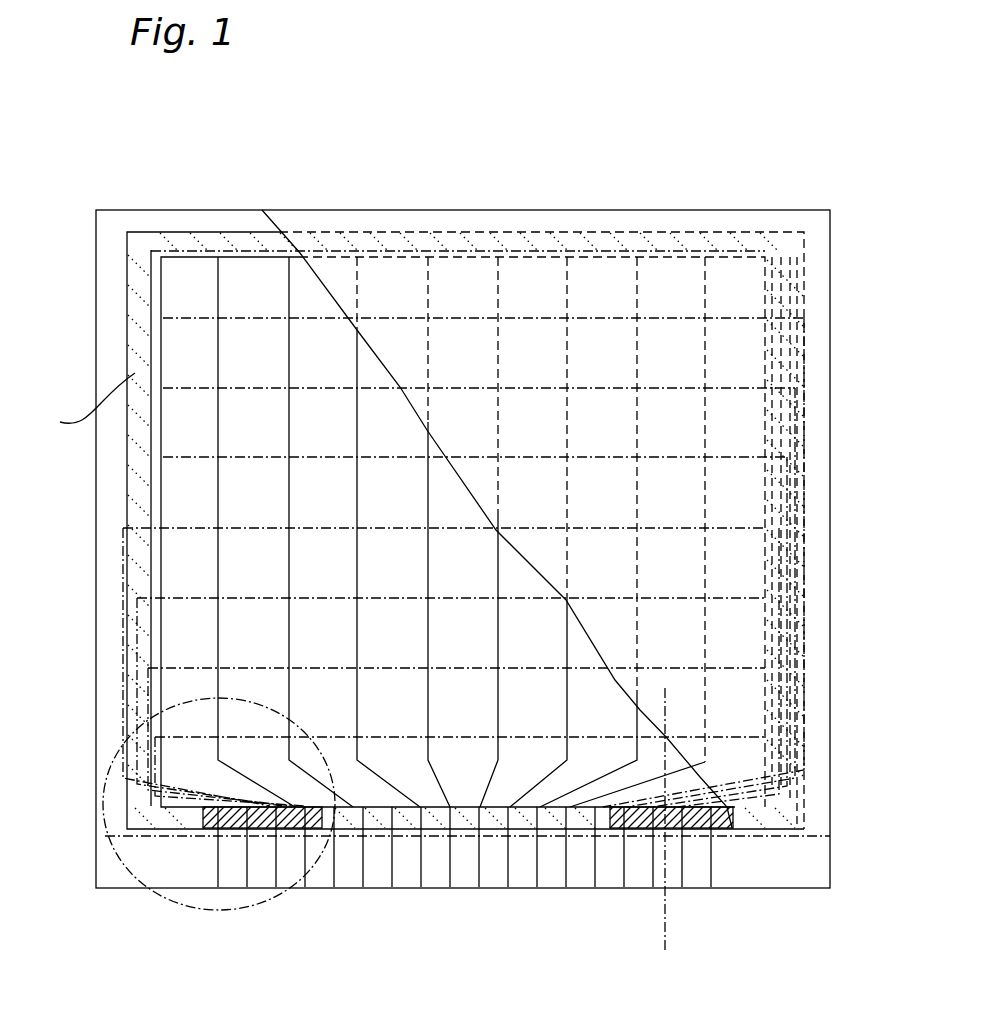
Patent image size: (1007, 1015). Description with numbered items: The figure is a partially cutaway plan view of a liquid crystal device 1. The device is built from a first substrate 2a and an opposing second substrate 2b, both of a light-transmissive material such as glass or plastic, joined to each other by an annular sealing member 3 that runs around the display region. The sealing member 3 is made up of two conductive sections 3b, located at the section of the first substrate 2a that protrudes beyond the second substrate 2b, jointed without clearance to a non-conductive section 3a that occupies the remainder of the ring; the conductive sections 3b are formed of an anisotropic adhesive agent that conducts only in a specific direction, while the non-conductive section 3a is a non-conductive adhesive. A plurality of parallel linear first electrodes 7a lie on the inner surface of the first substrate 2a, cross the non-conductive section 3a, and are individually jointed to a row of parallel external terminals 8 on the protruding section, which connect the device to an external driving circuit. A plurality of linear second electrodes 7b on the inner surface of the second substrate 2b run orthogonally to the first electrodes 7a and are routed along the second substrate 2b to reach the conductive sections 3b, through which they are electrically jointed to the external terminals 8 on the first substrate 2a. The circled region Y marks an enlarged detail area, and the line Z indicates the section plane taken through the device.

The liquid crystal device 1 is at (92, 192).
The first substrate 2a is at (108, 264).
The second substrate 2b is at (808, 227).
The sealing member 3 is at (124, 330).
The non-conductive section 3a is at (890, 812).
The conductive section 3b is at (297, 803).
The first electrodes 7a is at (287, 352).
The second electrodes 7b is at (253, 598).
The external terminals 8 is at (725, 895).
The enlarged region Y is at (133, 905).
The section line Z- Z is at (674, 703).